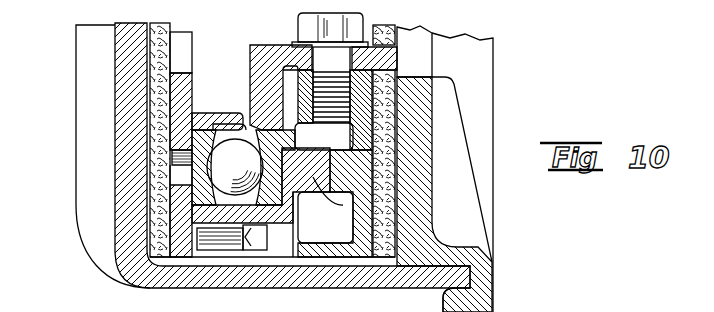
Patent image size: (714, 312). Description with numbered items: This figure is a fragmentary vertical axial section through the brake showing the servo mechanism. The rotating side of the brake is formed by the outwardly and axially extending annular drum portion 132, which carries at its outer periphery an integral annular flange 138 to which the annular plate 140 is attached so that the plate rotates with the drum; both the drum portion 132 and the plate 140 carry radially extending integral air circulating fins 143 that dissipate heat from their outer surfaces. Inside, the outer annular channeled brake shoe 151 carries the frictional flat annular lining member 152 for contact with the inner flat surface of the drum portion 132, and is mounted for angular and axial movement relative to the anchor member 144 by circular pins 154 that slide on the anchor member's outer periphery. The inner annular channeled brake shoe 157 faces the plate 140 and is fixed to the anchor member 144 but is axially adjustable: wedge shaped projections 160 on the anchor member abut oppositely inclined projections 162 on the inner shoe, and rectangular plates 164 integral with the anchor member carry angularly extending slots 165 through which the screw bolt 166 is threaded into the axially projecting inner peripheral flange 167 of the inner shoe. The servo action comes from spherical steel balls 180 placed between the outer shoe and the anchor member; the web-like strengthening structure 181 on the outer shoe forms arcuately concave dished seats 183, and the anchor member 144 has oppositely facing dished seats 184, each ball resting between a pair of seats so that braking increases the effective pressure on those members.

The drum portion 132 is at (118, 237).
The annular flange 138 is at (460, 307).
The annular plate 140 is at (420, 222).
The air circulating fins 143 is at (85, 157).
The anchor member 144 is at (262, 92).
The outer annular channeled brake shoe 151 is at (175, 90).
The frictional flat annular lining member 152 is at (160, 122).
The circular pins 154 is at (250, 238).
The inner annular channeled brake shoe 157 is at (363, 133).
The wedge shaped projections 160 is at (372, 203).
The projections 162 is at (332, 165).
The rectangular plates 164 is at (392, 60).
The slots 165 is at (357, 70).
The screw bolt 166 is at (372, 102).
The inner peripheral flange 167 is at (300, 47).
The spherical steel balls 180 is at (220, 165).
The web-like strengthening structure 181 is at (235, 117).
The dished seats 183 is at (197, 190).
The dished seats 184 is at (293, 193).